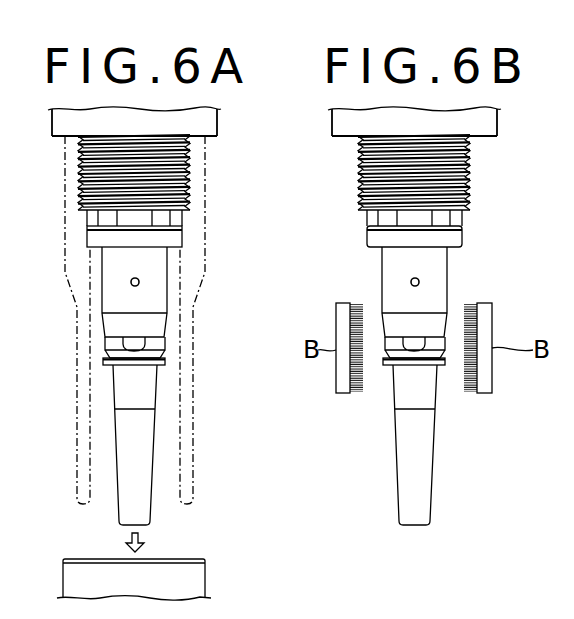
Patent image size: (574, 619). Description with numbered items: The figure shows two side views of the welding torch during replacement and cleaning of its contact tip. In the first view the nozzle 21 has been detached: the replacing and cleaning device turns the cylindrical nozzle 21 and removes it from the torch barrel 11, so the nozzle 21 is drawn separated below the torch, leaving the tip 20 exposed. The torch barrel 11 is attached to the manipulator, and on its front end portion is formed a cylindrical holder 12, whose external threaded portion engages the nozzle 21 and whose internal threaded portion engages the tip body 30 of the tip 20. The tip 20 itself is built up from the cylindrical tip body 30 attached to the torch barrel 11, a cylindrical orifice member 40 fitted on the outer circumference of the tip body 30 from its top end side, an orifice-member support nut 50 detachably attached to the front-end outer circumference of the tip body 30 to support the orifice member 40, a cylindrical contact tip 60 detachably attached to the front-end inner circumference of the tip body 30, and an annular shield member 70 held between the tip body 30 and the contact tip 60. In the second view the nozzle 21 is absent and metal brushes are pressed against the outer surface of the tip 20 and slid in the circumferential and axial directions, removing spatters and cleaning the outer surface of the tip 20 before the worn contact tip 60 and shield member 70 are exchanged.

In FIG. 6A, the torch barrel 11 is at (200, 120).
In FIG. 6B, the torch barrel 11 is at (480, 120).
In FIG. 6A, the holder 12 is at (188, 175).
In FIG. 6B, the holder 12 is at (468, 175).
In FIG. 6A, the tip 20 is at (173, 299).
In FIG. 6A, the nozzle 21 is at (186, 580).
In FIG. 6A, the tip body 30 is at (172, 215).
In FIG. 6B, the tip body 30 is at (452, 215).
In FIG. 6A, the orifice member 40 is at (168, 268).
In FIG. 6B, the orifice member 40 is at (448, 268).
In FIG. 6A, the orifice-member support nut 50 is at (165, 340).
In FIG. 6B, the orifice-member support nut 50 is at (445, 338).
In FIG. 6A, the contact tip 60 is at (140, 437).
In FIG. 6B, the contact tip 60 is at (420, 437).
In FIG. 6A, the shield member 70 is at (166, 362).
In FIG. 6B, the shield member 70 is at (446, 362).